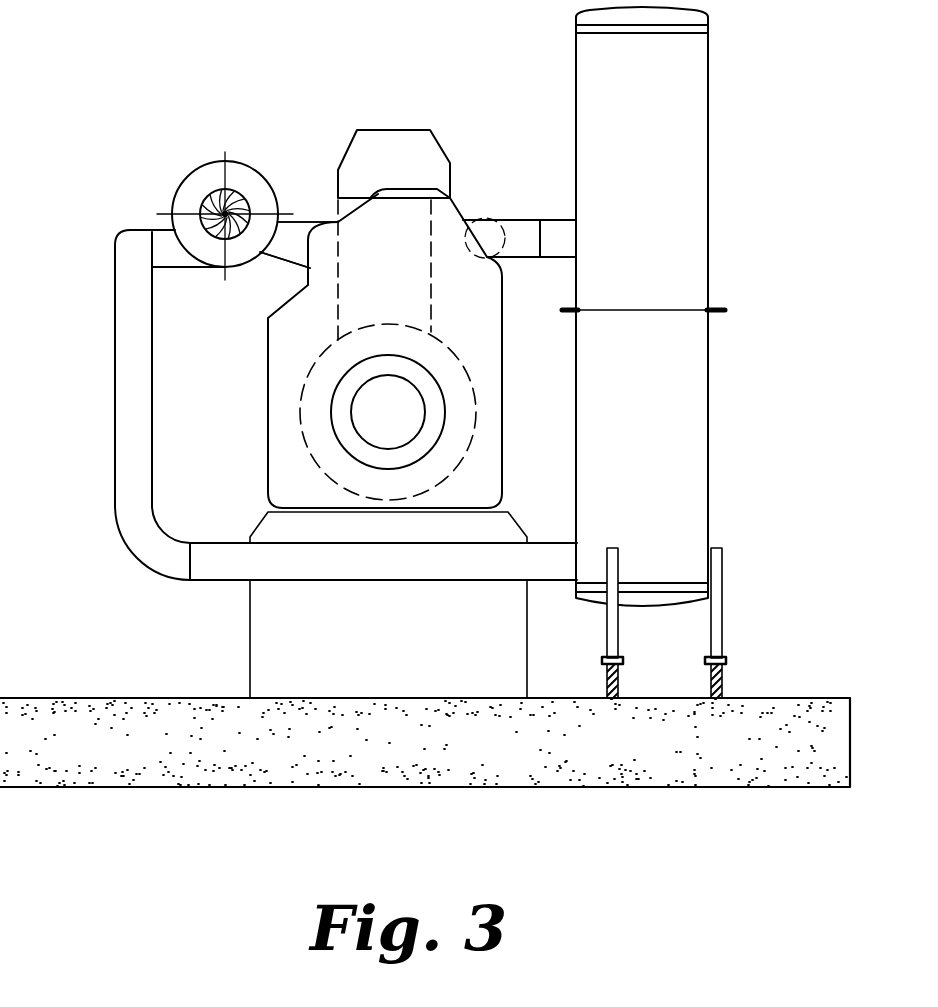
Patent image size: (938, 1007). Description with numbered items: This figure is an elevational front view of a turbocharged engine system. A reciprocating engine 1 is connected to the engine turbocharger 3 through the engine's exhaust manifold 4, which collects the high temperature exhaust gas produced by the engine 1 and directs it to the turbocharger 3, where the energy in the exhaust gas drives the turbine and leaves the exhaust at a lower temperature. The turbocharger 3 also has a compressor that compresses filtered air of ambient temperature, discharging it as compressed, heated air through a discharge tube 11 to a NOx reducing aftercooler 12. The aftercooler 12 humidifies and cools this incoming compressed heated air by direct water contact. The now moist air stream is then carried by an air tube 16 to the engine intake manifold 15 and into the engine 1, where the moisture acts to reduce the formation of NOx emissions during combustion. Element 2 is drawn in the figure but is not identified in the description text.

The blower housing 1 is at (463, 218).
The inlet bracket 2 is at (300, 222).
The fan 3 is at (270, 182).
The support arm 4 is at (296, 267).
The frame 11 is at (115, 432).
The tank 12 is at (708, 60).
The mounting bracket 15 is at (497, 258).
The mounting strap 16 is at (557, 218).